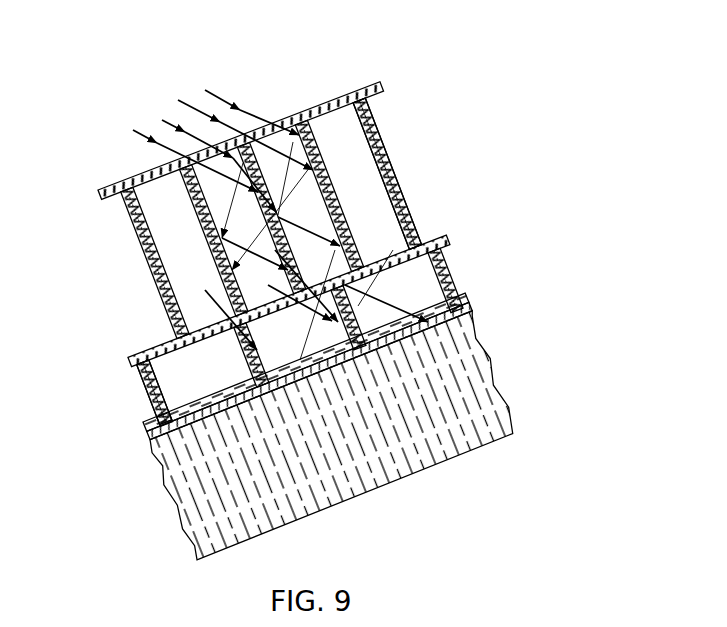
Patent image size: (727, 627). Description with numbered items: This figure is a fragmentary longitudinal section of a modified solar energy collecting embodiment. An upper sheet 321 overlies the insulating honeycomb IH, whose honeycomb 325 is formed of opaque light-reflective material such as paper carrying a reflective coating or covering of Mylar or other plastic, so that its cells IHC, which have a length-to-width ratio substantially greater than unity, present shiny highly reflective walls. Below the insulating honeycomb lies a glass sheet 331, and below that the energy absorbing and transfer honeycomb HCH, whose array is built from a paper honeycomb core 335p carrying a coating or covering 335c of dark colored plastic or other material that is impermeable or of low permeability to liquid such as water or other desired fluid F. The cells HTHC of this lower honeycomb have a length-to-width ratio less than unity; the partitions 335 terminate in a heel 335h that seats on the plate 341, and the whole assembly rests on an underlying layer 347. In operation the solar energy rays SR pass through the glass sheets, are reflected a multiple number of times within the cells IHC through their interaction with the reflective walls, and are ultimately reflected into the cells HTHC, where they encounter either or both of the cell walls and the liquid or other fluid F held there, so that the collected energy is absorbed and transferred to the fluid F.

The transparent cover plate 321 is at (110, 183).
The honeycomb 325 is at (307, 218).
The glass sheet 331 is at (448, 239).
The glass sheet 335 is at (137, 378).
The partition coating 335c is at (257, 350).
The paper honeycomb core 335p is at (140, 390).
The partition heel 335h is at (157, 446).
The absorber plate 341 is at (474, 313).
The insulation layer 347 is at (182, 527).
The fluid F is at (147, 437).
The solar energy rays SR is at (212, 86).
The insulating honeycomb IH is at (116, 361).
The cells of the insulating honeycomb IHC is at (333, 137).
The cells of the heat transfer honeycomb HTHC is at (422, 293).
The heat collecting honeycomb HCH is at (578, 280).